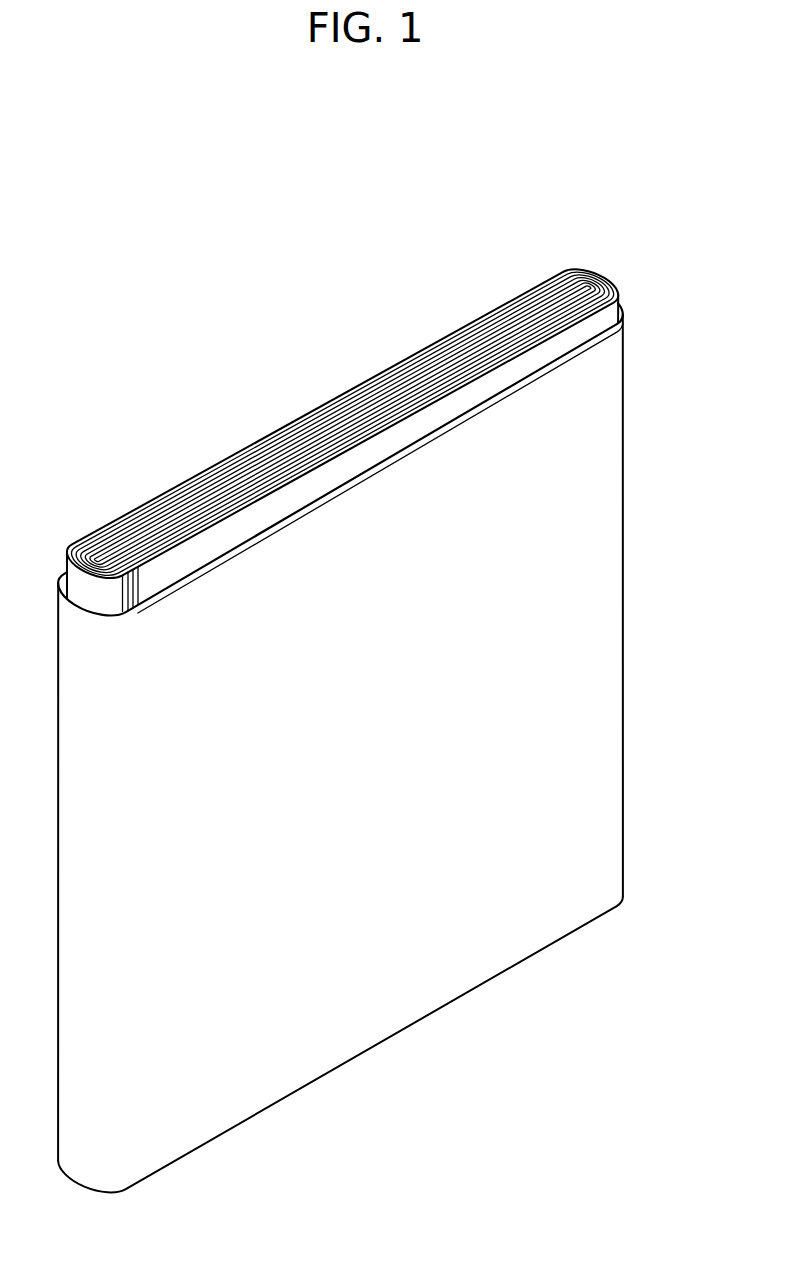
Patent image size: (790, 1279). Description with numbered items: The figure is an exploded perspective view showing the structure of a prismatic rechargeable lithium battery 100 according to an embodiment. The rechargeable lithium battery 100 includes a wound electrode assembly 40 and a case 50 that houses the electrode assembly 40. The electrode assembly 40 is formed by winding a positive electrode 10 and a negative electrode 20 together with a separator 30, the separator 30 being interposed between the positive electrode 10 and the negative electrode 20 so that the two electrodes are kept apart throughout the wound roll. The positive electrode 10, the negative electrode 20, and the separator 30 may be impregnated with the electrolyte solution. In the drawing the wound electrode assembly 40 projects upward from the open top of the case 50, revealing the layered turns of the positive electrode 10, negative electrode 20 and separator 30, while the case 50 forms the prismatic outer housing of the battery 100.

The rechargeable lithium battery 100 is at (185, 263).
The positive electrode 10 is at (615, 287).
The negative electrode 20 is at (572, 283).
The separator 30 is at (598, 268).
The electrode assembly 40 is at (322, 393).
The case 50 is at (607, 592).